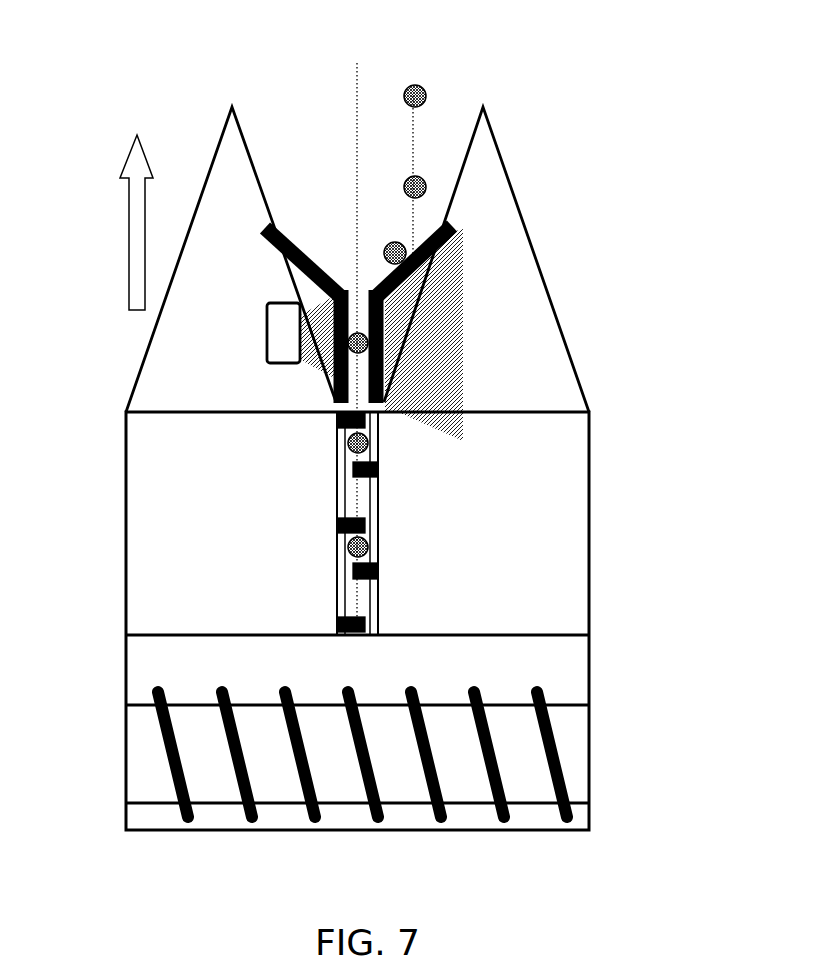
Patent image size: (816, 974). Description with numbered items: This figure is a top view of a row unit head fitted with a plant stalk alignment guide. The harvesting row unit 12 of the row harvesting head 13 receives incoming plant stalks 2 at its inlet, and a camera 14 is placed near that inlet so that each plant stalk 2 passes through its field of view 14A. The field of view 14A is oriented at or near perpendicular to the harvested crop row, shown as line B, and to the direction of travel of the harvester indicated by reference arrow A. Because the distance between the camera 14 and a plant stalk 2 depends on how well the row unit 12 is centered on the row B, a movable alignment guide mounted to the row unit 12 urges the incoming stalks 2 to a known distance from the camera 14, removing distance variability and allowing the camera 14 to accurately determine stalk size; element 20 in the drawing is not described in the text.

The plant stalk 2 is at (427, 93).
The harvesting row unit 12 is at (133, 527).
The row harvesting head 13 is at (575, 747).
The camera 14 is at (264, 331).
The field of view 14A is at (463, 293).
The guide 20 is at (312, 265).
The direction of travel A is at (125, 222).
The row B is at (385, 40).